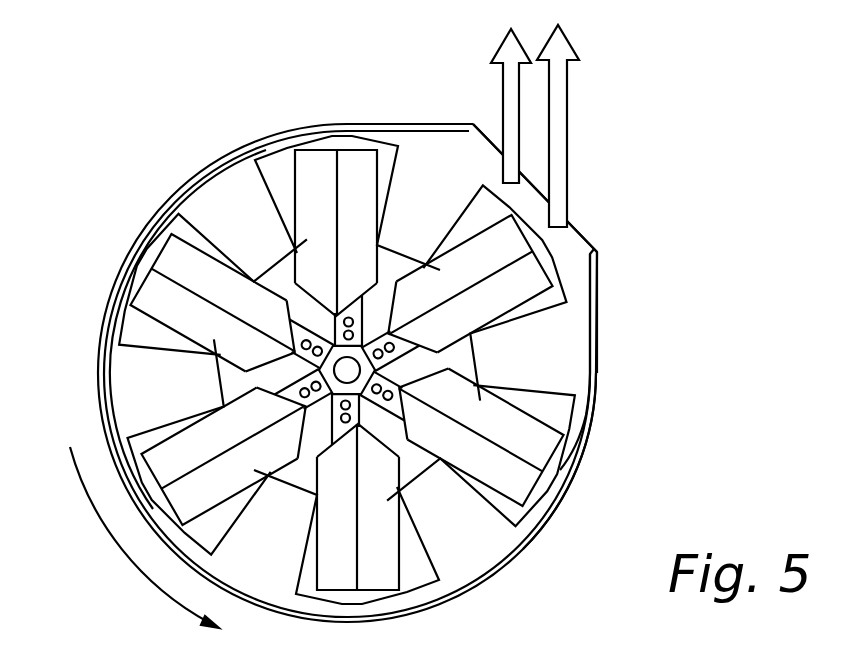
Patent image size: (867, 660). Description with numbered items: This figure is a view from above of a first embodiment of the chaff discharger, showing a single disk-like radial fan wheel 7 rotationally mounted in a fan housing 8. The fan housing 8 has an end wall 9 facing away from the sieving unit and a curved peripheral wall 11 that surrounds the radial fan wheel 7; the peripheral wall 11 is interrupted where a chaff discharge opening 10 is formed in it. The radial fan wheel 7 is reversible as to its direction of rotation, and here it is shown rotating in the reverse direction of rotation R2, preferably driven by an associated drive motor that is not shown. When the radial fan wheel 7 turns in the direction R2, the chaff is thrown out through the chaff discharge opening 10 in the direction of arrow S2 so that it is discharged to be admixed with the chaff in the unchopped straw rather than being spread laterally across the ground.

The radial fan wheel 7 is at (270, 121).
The fan housing 8 is at (578, 302).
The end wall 9 is at (587, 361).
The chaff discharge opening 10 is at (532, 202).
The curved peripheral wall 11 is at (587, 452).
The direction of chaff discharge S2 is at (557, 99).
The reverse direction of rotation R2 is at (133, 560).